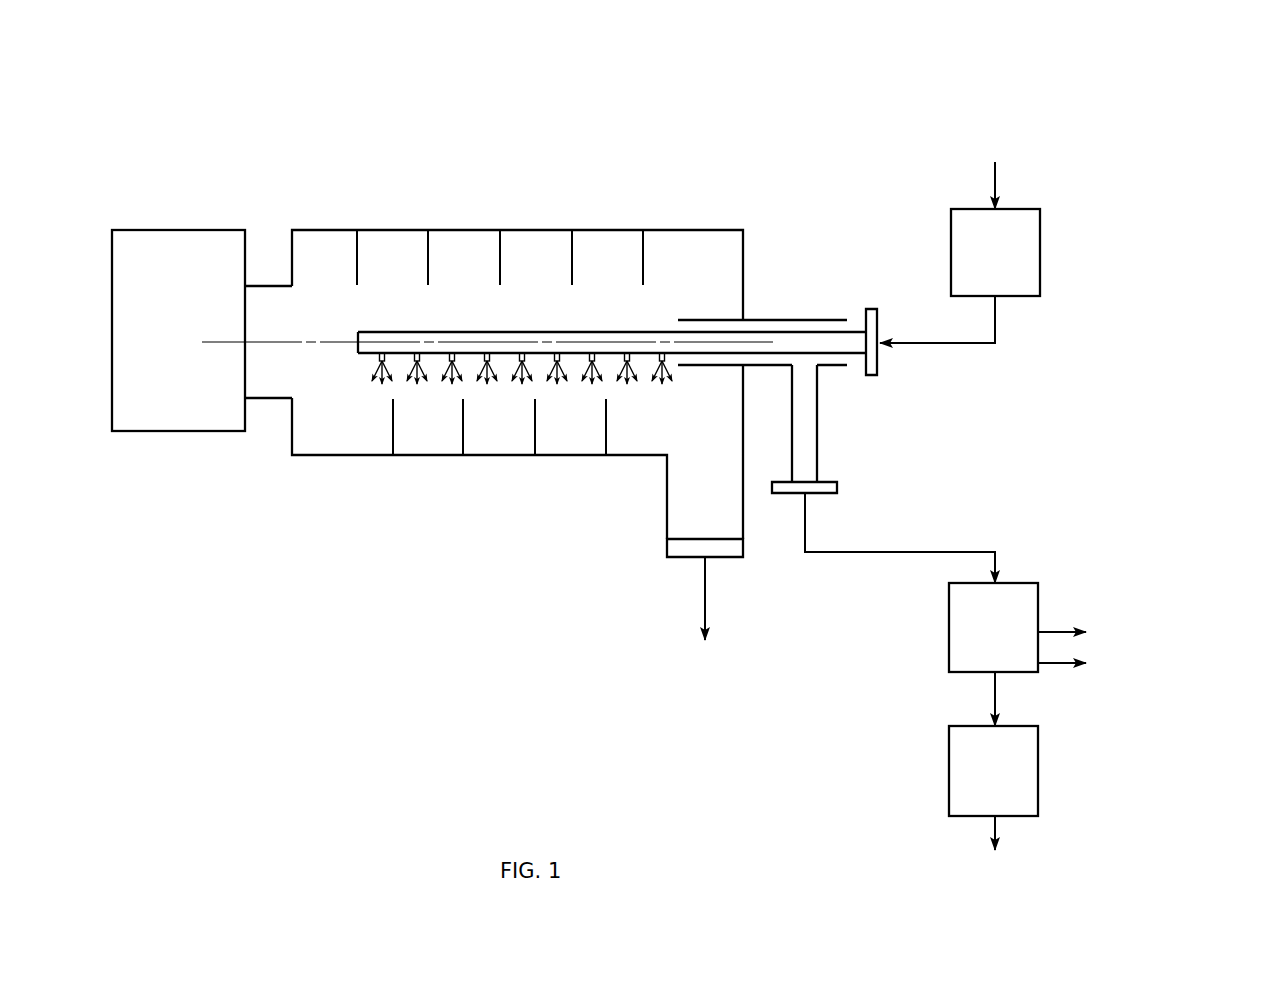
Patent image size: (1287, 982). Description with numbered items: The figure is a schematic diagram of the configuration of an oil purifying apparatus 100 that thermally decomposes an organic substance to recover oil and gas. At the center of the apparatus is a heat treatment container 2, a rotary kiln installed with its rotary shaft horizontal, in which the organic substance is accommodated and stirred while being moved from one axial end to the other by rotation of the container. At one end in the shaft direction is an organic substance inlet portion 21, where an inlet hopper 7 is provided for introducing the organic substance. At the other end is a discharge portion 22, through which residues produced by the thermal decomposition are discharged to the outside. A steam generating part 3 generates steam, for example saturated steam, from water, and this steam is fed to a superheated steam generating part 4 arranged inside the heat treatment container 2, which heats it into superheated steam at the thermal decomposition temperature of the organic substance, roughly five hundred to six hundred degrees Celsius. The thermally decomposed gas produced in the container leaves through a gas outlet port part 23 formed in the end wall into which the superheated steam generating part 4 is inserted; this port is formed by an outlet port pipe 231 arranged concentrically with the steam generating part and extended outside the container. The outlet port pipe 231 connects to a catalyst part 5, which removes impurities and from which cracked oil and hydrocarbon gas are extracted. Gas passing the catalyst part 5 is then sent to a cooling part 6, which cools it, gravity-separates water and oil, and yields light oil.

The oil purifying apparatus 100 is at (294, 127).
The heat treatment container 2 is at (517, 230).
The organic substance inlet portion 21 is at (270, 286).
The discharge portion 22 is at (665, 498).
The gas outlet port part 23 is at (721, 314).
The outlet port pipe 231 is at (790, 318).
The steam generating part 3 is at (1040, 253).
The superheated steam generating part 4 is at (598, 332).
The catalyst part 5 is at (1038, 594).
The cooling part 6 is at (1038, 770).
The inlet hopper 7 is at (179, 230).